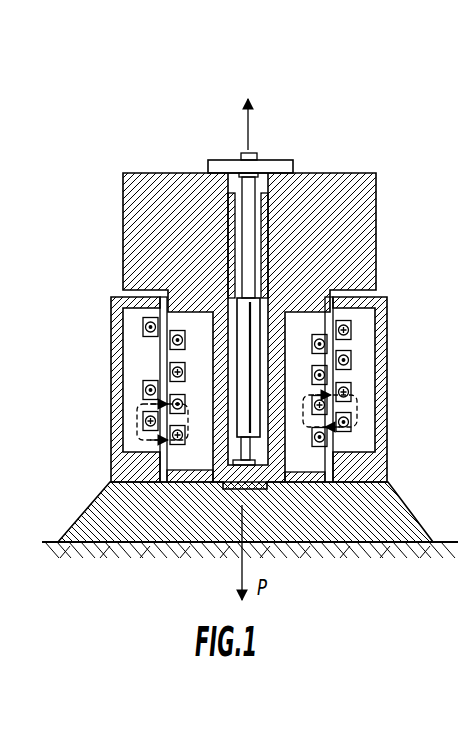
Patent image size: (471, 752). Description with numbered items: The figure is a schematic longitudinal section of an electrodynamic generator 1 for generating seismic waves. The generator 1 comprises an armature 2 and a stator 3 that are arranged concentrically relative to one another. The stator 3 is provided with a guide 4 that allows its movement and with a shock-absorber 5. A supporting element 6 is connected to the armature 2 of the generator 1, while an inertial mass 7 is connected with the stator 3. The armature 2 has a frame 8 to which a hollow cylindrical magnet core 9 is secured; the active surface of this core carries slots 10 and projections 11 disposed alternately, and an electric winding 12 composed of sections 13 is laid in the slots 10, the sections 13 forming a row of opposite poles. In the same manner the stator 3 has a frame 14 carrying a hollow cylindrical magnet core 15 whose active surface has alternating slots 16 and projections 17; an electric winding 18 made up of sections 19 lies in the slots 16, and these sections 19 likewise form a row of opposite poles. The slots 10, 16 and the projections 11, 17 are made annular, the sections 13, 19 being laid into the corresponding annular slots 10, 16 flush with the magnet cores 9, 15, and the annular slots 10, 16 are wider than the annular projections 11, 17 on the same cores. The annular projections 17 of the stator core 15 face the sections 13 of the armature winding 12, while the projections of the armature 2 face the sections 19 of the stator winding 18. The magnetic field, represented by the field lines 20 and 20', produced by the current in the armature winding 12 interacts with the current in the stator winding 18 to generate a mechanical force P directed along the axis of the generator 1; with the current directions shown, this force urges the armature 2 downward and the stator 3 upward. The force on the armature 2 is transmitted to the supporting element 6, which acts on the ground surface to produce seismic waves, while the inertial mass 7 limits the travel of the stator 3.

The electrodynamic generator 1 is at (173, 158).
The armature 2 is at (390, 336).
The stator 3 is at (298, 367).
The guide 4 is at (308, 332).
The shock-absorber 5 is at (259, 218).
The supporting element 6 is at (418, 524).
The inertial mass 7 is at (369, 220).
The frame 8 is at (388, 372).
The magnet core 9 is at (374, 455).
The slots 10 is at (359, 348).
The projections 11 is at (352, 308).
The electric winding 12 is at (142, 392).
The sections 13 is at (143, 327).
The frame 14 is at (188, 483).
The magnet core 15 is at (190, 358).
The slots 16 is at (312, 434).
The projections 17 is at (312, 366).
The electric winding 18 is at (186, 441).
The sections 19 is at (304, 397).
The field lines 20 is at (129, 424).
The field lines 20' is at (334, 425).